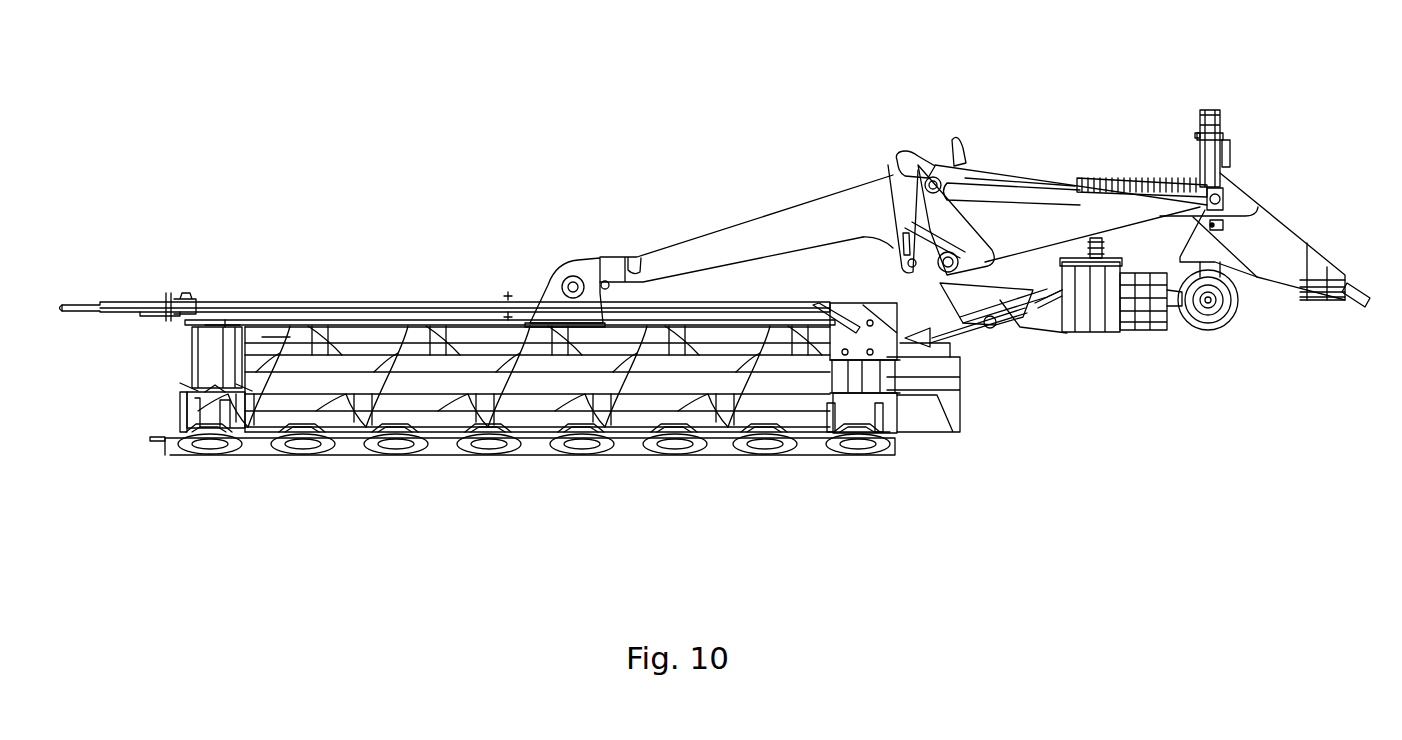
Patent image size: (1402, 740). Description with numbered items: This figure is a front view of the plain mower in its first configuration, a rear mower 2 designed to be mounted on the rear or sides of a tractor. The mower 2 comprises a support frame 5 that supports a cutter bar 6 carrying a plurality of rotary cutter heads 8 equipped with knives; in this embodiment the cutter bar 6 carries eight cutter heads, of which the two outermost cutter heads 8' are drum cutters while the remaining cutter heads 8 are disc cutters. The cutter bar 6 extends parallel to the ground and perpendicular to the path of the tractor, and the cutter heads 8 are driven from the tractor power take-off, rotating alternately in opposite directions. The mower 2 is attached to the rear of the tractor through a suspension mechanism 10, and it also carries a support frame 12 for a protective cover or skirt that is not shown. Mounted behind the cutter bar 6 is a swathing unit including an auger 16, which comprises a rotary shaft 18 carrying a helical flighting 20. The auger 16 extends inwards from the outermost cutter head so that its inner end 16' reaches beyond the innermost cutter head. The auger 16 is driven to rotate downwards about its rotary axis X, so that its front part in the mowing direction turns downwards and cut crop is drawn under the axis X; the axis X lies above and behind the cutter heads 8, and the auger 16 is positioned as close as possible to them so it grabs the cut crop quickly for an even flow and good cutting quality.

The rear mower 2 is at (293, 163).
The support frame 5 is at (373, 315).
The cutter bar 6 is at (813, 457).
The rotary cutter heads 8 is at (534, 473).
The outermost cutter heads 8' is at (556, 473).
The suspension mechanism 10 is at (1060, 113).
The support frame 12 is at (100, 308).
The auger 16 is at (344, 337).
The inner end 16' is at (920, 370).
The rotary shaft 18 is at (445, 393).
The helical flighting 20 is at (595, 410).
The rotary axis X is at (325, 367).